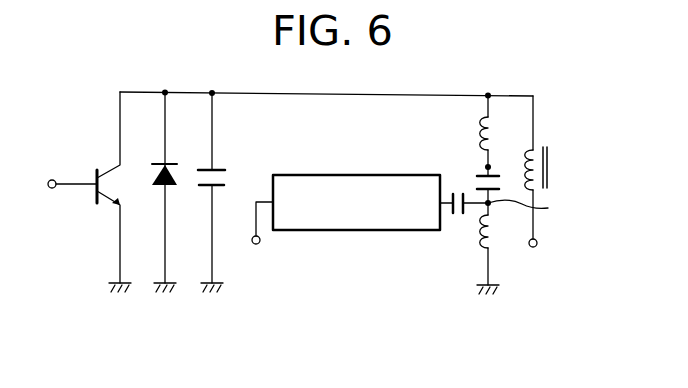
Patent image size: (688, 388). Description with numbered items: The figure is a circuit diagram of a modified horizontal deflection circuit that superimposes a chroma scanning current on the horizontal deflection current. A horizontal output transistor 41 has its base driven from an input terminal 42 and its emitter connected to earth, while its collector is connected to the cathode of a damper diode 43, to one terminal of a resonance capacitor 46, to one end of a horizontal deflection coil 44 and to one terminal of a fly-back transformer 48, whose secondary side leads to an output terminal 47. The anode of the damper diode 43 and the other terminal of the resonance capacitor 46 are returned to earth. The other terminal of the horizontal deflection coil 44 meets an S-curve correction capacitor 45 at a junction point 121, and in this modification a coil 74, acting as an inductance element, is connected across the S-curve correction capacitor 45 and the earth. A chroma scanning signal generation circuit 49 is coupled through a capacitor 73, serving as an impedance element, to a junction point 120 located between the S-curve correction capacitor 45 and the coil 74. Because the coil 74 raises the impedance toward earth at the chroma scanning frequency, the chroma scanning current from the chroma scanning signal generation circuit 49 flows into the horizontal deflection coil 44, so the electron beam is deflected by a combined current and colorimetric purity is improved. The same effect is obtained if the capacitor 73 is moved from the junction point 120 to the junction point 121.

The horizontal output transistor 41 is at (93, 197).
The input terminal 42 is at (52, 188).
The damper diode 43 is at (169, 188).
The horizontal deflection coil 44 is at (484, 122).
The S-curve correction capacitor 45 is at (480, 183).
The resonance capacitor 46 is at (225, 178).
The output terminal 47 is at (536, 247).
The fly-back transformer 48 is at (550, 168).
The chroma scanning signal generation circuit 49 is at (358, 231).
The capacitor 73 is at (462, 215).
The coil 74 is at (482, 242).
The junction point 120 is at (543, 207).
The junction point 121 is at (486, 165).